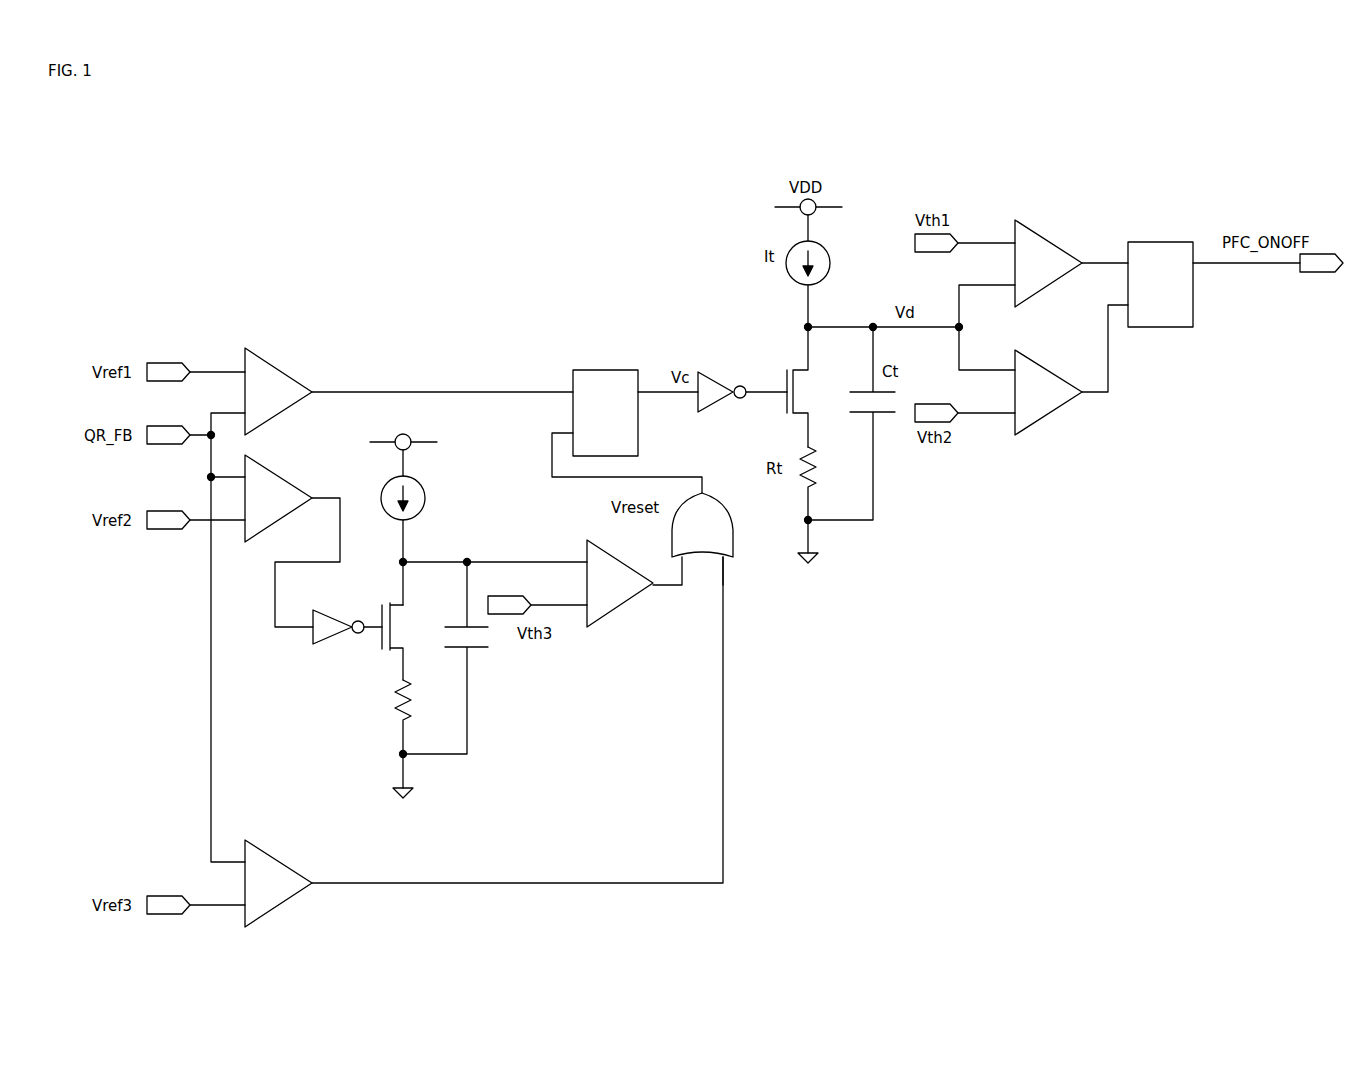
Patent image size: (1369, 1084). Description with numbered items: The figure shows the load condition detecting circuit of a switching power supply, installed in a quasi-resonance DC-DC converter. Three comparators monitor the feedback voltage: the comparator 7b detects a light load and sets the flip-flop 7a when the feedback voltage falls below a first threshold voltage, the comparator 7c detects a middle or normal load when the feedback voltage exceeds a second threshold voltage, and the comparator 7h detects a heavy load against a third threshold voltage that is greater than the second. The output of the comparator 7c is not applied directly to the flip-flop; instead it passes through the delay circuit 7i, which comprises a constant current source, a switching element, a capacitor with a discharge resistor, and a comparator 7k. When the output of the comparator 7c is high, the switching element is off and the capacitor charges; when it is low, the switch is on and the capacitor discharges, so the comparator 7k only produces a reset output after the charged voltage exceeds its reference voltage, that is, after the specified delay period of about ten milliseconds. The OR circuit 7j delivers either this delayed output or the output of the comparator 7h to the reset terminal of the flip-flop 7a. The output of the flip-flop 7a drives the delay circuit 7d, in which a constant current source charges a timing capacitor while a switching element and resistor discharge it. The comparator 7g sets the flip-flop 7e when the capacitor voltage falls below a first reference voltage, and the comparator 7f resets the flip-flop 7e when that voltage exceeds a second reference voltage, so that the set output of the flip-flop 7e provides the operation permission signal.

The flip-flop 7a is at (600, 370).
The comparator 7b is at (283, 368).
The comparator 7c is at (283, 474).
The delay circuit 7d is at (780, 355).
The flip-flop 7e is at (1163, 242).
The comparator 7f is at (1050, 413).
The comparator 7g is at (1040, 238).
The comparator 7h is at (268, 857).
The delay circuit 7i is at (512, 700).
The OR circuit 7j is at (733, 548).
The comparator 7k is at (630, 603).